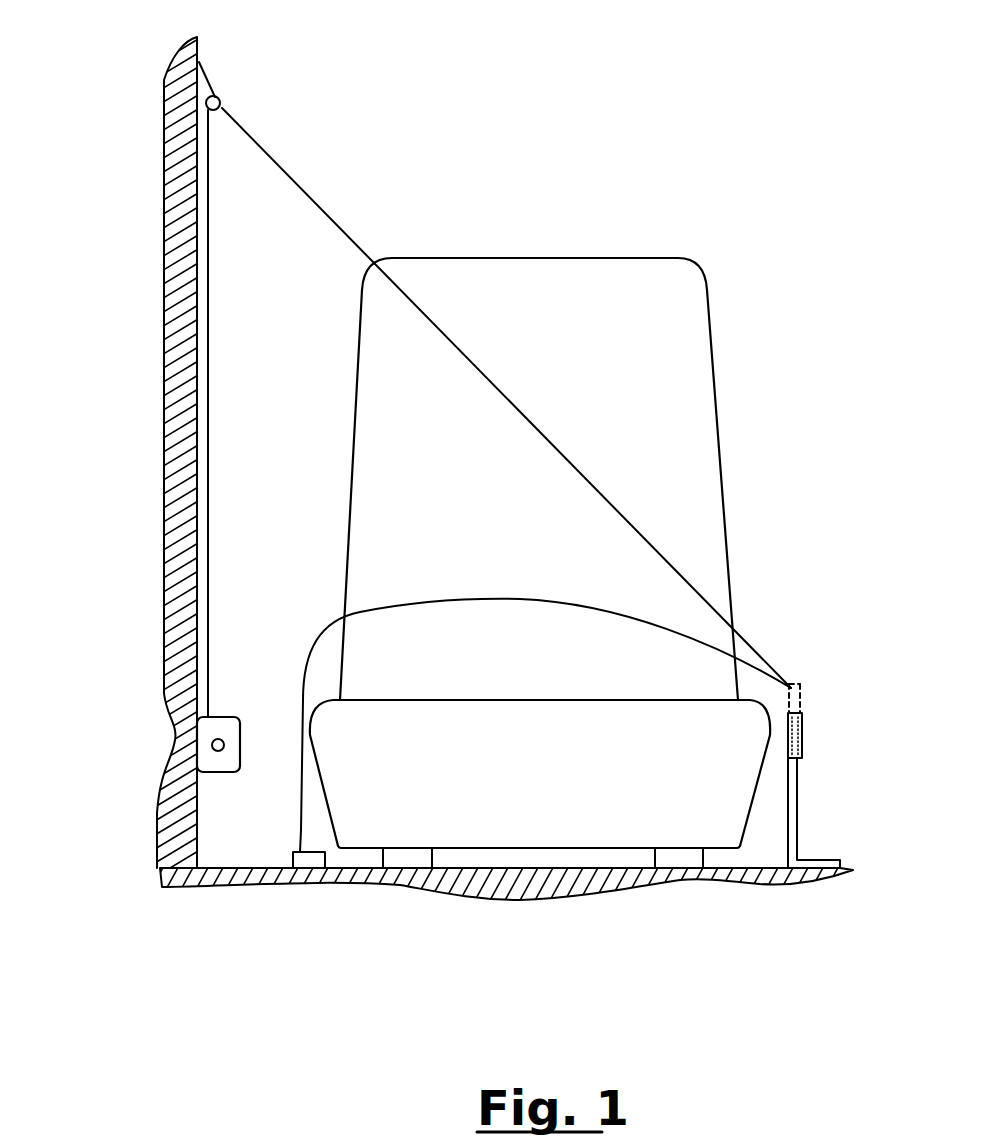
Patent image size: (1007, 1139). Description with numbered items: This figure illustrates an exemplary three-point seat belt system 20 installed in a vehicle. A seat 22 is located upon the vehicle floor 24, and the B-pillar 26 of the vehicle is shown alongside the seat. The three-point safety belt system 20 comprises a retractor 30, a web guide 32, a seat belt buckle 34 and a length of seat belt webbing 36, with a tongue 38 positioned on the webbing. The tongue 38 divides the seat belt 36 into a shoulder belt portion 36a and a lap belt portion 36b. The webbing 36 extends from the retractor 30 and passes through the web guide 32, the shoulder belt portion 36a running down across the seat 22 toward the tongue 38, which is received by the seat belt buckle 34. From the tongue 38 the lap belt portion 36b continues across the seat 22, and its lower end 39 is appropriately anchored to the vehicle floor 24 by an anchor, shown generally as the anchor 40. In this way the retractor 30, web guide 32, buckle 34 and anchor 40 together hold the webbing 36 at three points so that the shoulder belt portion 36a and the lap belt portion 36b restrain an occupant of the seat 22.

The three-point seat belt system 20 is at (559, 516).
The seat 22 is at (685, 435).
The vehicle floor 24 is at (322, 870).
The B-pillar 26 is at (168, 135).
The retractor 30 is at (228, 717).
The web guide 32 is at (206, 74).
The seat belt buckle 34 is at (802, 755).
The seat belt webbing 36 is at (492, 559).
The shoulder belt portion 36a is at (346, 232).
The lap belt portion 36b is at (528, 598).
The tongue 38 is at (803, 690).
The strap end portion 39 is at (298, 817).
The anchor 40 is at (300, 853).